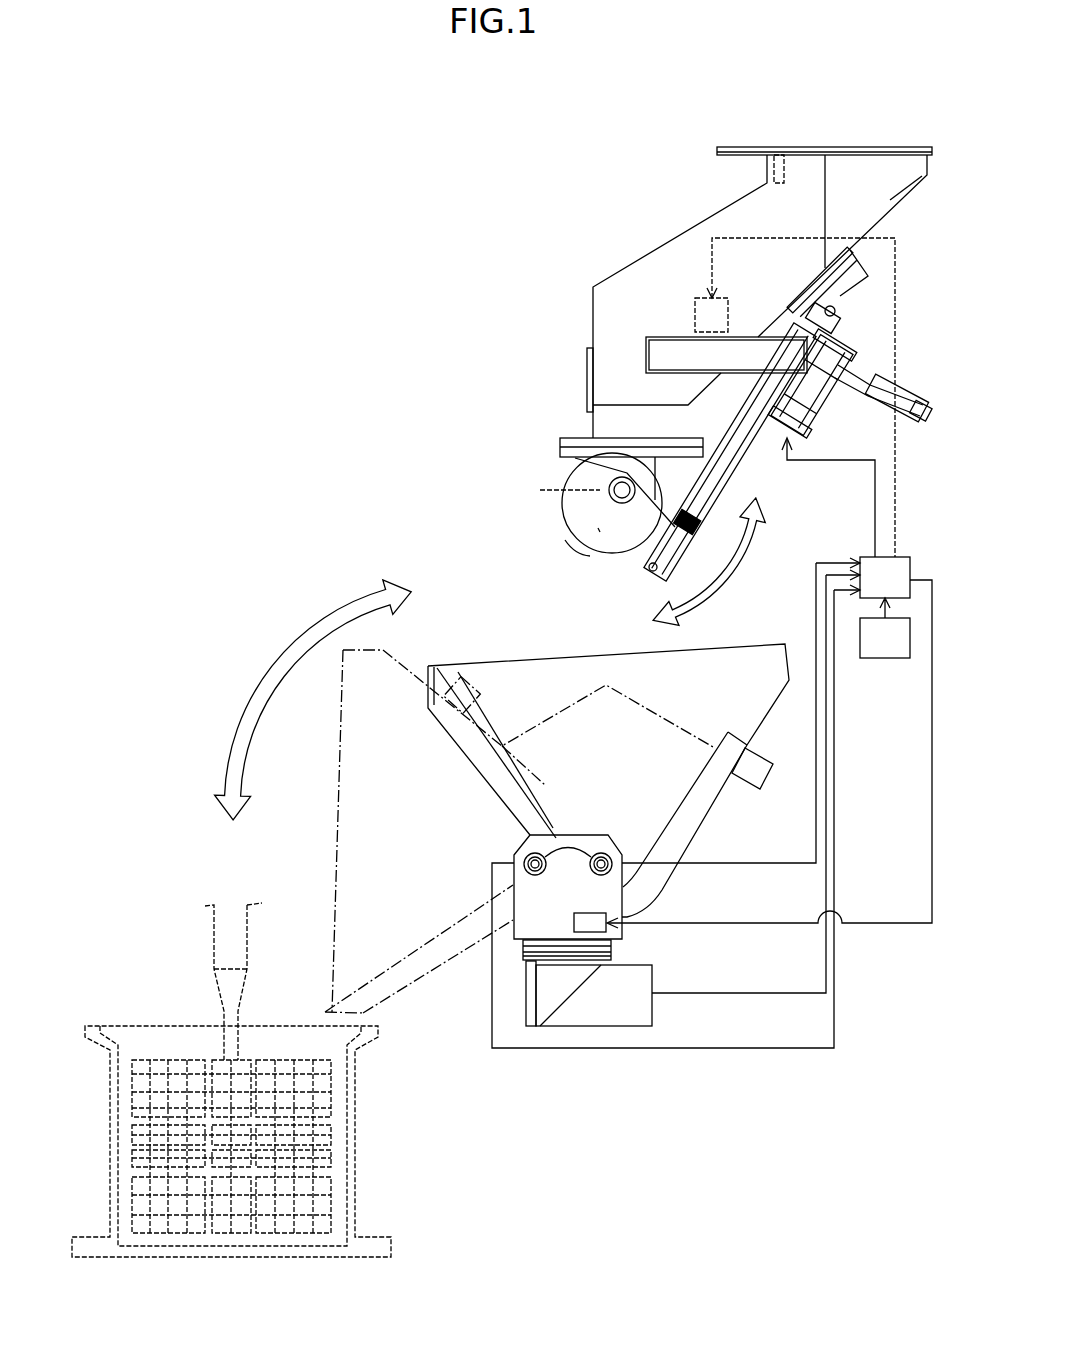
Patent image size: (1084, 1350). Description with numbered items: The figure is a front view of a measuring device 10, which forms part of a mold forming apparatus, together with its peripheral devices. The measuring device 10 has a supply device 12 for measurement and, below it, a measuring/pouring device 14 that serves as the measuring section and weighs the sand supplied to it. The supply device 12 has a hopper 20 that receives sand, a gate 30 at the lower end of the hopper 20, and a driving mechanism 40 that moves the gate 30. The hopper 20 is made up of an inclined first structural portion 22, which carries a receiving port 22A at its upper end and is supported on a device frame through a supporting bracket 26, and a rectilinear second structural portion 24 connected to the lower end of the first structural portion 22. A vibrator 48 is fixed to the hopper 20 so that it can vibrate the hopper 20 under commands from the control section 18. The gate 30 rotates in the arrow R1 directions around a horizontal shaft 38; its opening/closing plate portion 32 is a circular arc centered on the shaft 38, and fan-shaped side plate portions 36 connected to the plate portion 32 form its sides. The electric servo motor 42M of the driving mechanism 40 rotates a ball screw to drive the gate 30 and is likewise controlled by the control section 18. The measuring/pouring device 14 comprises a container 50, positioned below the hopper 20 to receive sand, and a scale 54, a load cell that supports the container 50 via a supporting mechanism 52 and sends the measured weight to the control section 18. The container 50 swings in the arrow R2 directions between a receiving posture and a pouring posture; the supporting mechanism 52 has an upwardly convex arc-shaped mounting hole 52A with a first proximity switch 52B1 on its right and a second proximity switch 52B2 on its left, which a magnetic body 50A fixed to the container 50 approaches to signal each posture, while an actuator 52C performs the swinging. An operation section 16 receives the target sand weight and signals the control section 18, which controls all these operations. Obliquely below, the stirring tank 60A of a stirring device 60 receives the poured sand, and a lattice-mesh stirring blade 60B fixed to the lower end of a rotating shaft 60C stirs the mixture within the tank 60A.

The measuring device 10 is at (600, 150).
The supply device for measurement 12 is at (540, 255).
The measuring/pouring device 14 is at (465, 583).
The operation section 16 is at (886, 660).
The control section 18 is at (906, 560).
The hopper 20 is at (582, 320).
The first structural portion 22 is at (653, 252).
The receiving port 22A is at (776, 150).
The second structural portion 24 is at (625, 468).
The supporting bracket 26 is at (655, 356).
The gate 30 is at (560, 498).
The opening/closing plate portion 32 is at (578, 548).
The side plate portion 36 is at (598, 530).
The shaft 38 is at (608, 489).
The driving mechanism 40 is at (775, 470).
The electric servo motor 42M is at (832, 412).
The vibrator 48 is at (733, 302).
The container 50 is at (471, 632).
The magnetic body 50A is at (525, 851).
The supporting mechanism 52 is at (520, 831).
The mounting hole 52A is at (553, 880).
The first proximity switch 52B1 is at (604, 846).
The second proximity switch 52B2 is at (546, 842).
The actuator 52C is at (612, 946).
The scale 54 is at (640, 1006).
The stirring device 60 is at (100, 888).
The stirring tank 60A is at (104, 1062).
The stirring blade 60B is at (258, 1238).
The rotating shaft 60C is at (212, 909).
The arrow R1 directions R1 is at (740, 575).
The arrow R2 directions R2 is at (290, 678).